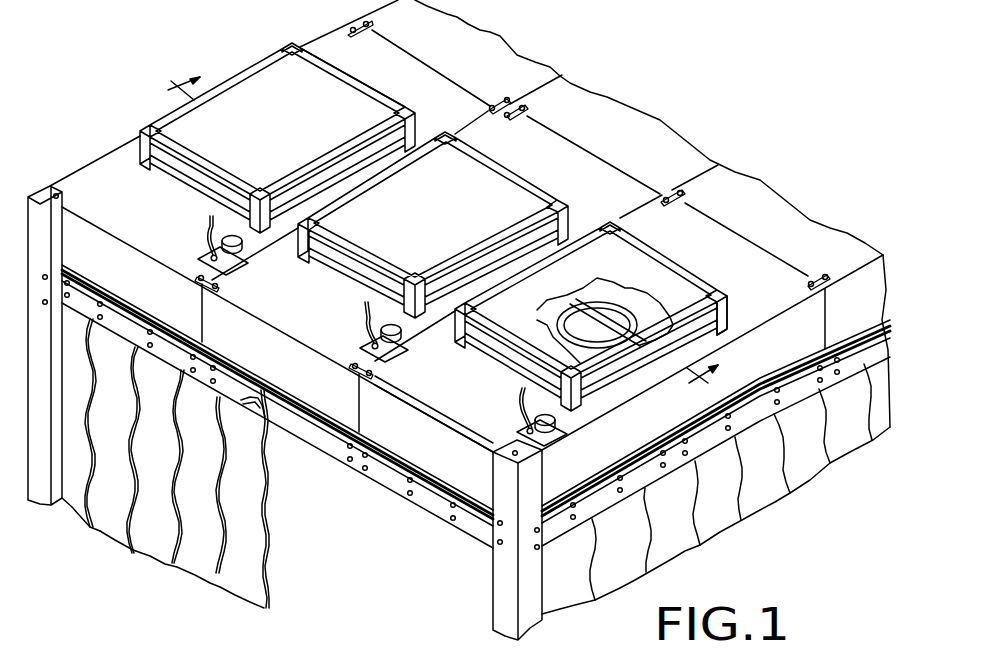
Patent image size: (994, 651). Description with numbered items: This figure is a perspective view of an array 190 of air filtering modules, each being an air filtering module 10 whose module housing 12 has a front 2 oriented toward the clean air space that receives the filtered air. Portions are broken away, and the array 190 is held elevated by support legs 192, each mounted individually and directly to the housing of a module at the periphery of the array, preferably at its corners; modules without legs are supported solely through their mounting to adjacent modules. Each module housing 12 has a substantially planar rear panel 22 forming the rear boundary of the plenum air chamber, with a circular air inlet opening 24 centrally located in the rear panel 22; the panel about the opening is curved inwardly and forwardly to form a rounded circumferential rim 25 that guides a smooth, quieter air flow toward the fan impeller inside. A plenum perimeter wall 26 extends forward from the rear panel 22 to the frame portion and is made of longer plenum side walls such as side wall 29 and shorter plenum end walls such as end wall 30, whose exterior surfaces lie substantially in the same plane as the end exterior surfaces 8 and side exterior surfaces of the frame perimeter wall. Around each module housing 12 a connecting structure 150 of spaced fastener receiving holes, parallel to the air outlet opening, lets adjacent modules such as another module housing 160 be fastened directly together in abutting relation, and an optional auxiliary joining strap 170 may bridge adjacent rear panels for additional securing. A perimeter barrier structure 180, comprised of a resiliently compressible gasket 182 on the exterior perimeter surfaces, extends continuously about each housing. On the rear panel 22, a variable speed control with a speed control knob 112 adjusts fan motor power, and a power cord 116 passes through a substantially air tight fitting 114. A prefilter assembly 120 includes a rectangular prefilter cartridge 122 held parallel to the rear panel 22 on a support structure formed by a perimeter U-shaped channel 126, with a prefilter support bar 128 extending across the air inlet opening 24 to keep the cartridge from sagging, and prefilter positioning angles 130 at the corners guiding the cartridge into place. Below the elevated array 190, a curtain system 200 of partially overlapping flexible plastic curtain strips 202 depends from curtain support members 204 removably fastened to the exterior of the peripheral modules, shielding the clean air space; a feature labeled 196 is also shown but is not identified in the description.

The front 2 is at (450, 221).
The end exterior surfaces 8 is at (322, 418).
The air filtering module 10 is at (311, 40).
The module housing 12 is at (262, 330).
The plenum rear panel 22 is at (441, 385).
The air inlet opening 24 is at (587, 287).
The rounded circumferential rim 25 is at (540, 317).
The plenum perimeter wall 26 is at (446, 431).
The plenum side wall 29 is at (781, 358).
The plenum end wall 30 is at (402, 432).
The speed control knob 112 is at (240, 250).
The air tight fitting 114 is at (210, 253).
The power cord 116 is at (200, 217).
The prefilter assembly 120 is at (399, 95).
The prefilter cartridge 122 is at (362, 58).
The perimeter U-shaped channel 126 is at (620, 373).
The prefilter support bar 128 is at (613, 323).
The prefilter positioning angle 130 is at (720, 304).
The connecting structure 150 is at (345, 460).
The another module housing 160 is at (168, 282).
The auxiliary joining strap 170 is at (662, 189).
The perimeter barrier structure 180 is at (420, 471).
The perimeter gasket 182 is at (427, 486).
The array 190 is at (604, 83).
The support legs 192 is at (493, 594).
The fastener 196 is at (497, 541).
The curtain system 200 is at (194, 463).
The curtain strips 202 is at (97, 530).
The curtain support members 204 is at (263, 420).